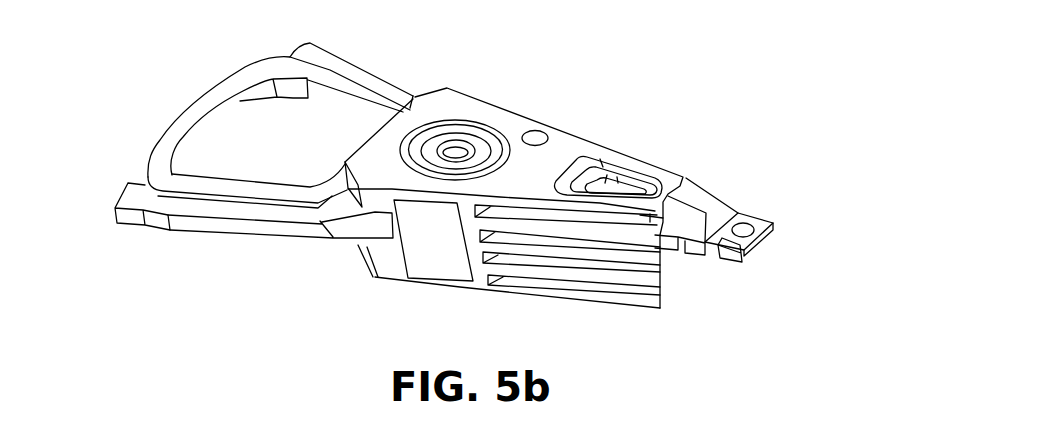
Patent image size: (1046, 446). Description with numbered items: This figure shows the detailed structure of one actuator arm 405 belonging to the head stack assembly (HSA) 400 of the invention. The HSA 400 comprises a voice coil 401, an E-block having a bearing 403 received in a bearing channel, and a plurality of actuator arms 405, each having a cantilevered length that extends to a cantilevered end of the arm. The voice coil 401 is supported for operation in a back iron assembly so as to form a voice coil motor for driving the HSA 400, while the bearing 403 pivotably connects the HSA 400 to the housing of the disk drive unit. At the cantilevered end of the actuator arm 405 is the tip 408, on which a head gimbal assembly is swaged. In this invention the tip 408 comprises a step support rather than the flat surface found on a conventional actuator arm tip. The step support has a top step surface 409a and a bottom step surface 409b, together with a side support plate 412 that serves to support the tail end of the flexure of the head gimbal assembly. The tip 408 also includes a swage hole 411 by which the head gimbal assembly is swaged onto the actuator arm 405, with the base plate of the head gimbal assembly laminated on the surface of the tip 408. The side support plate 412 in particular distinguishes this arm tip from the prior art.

The head stack assembly (HSA) 400 is at (372, 162).
The voice coil 401 is at (202, 115).
The bearing 403 is at (436, 153).
The actuator arm 405 is at (557, 208).
The tip 408 is at (735, 182).
The top step surface 409a is at (765, 219).
The bottom step surface 409b is at (766, 243).
The swage hole 411 is at (749, 226).
The side support plate 412 is at (729, 260).